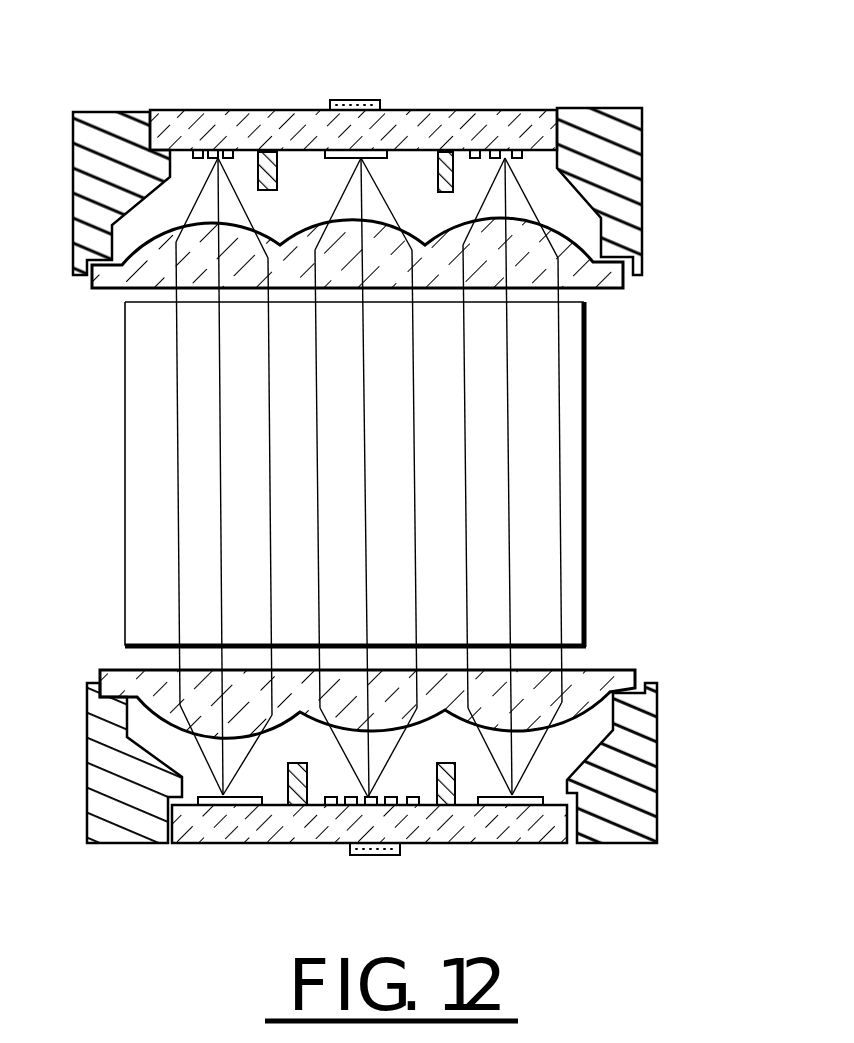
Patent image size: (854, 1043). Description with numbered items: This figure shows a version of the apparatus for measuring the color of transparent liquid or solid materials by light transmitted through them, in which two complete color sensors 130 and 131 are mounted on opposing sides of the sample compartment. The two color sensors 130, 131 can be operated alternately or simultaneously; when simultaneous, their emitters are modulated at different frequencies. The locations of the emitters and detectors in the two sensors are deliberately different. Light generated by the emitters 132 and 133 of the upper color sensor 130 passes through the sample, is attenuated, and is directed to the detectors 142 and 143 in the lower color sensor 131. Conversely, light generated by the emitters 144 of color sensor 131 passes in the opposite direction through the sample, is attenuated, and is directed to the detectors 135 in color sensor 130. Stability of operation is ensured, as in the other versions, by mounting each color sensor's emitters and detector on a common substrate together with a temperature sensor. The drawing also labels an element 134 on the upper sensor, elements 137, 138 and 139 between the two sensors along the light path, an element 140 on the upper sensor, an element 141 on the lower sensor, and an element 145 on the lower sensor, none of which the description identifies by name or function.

The color sensor 130 is at (462, 52).
The color sensor 131 is at (522, 895).
The emitters 132 is at (198, 158).
The emitters 133 is at (497, 160).
The connector pad 134 is at (362, 100).
The detectors 135 is at (376, 160).
The upper lens plate 137 is at (603, 288).
The transparent body 138 is at (398, 474).
The lower lens plate 139 is at (607, 668).
The upper housing 140 is at (644, 211).
The lower housing 141 is at (658, 752).
The detectors 142 is at (493, 795).
The detectors 143 is at (207, 797).
The emitters 144 is at (390, 795).
The connector pad 145 is at (363, 858).